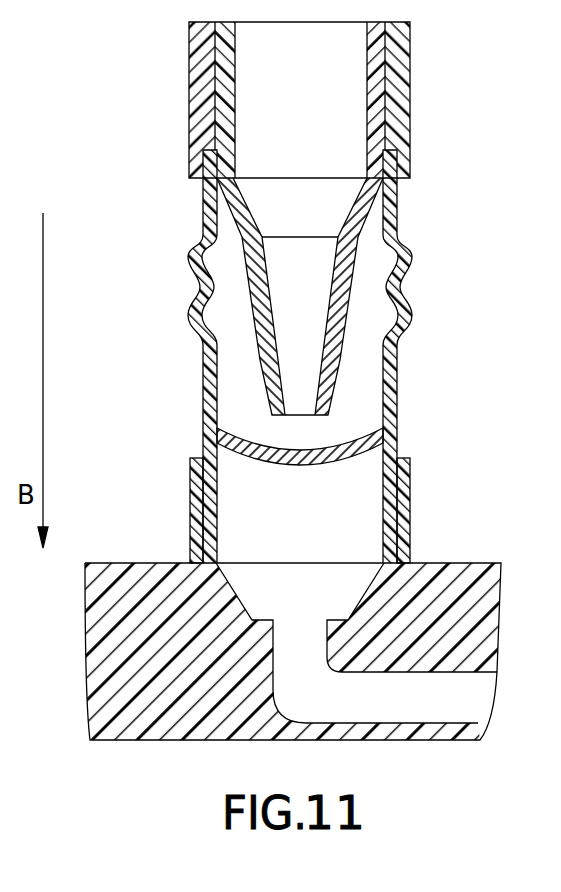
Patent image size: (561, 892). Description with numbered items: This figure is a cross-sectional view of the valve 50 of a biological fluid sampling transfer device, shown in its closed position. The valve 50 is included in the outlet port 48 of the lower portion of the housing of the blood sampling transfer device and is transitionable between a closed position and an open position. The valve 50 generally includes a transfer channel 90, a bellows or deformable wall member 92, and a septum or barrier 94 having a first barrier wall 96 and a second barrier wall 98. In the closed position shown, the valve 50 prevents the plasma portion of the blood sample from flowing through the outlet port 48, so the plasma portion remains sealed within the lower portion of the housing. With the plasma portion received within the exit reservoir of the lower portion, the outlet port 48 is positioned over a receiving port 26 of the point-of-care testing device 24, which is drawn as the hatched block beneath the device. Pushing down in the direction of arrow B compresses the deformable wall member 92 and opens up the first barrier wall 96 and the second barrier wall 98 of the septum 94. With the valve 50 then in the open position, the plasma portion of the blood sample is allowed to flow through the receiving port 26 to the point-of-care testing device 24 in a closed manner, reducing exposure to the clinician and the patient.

The point-of-care testing device 24 is at (440, 563).
The receiving port 26 is at (229, 534).
The outlet port 48 is at (250, 273).
The valve 50 is at (452, 238).
The transfer channel 90 is at (333, 342).
The deformable wall member 92 is at (201, 290).
The septum 94 is at (363, 443).
The first barrier wall 96 is at (248, 457).
The second barrier wall 98 is at (338, 457).